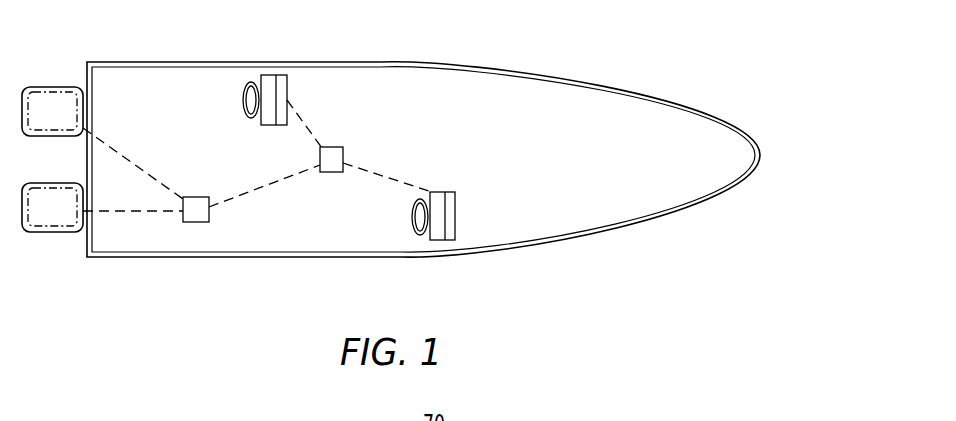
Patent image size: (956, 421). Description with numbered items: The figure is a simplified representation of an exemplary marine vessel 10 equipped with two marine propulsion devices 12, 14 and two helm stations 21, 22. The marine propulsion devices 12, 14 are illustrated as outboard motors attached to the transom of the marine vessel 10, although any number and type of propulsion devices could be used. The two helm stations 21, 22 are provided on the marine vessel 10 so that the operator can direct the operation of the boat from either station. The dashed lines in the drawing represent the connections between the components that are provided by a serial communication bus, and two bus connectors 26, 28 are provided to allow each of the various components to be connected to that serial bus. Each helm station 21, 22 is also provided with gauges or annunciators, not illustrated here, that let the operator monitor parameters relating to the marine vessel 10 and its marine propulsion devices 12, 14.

The marine vessel 10 is at (580, 95).
The marine propulsion device 12 is at (49, 100).
The marine propulsion device 14 is at (50, 222).
The helm station 21 is at (270, 80).
The helm station 22 is at (440, 232).
The bus connector 26 is at (197, 222).
The bus connector 28 is at (340, 152).